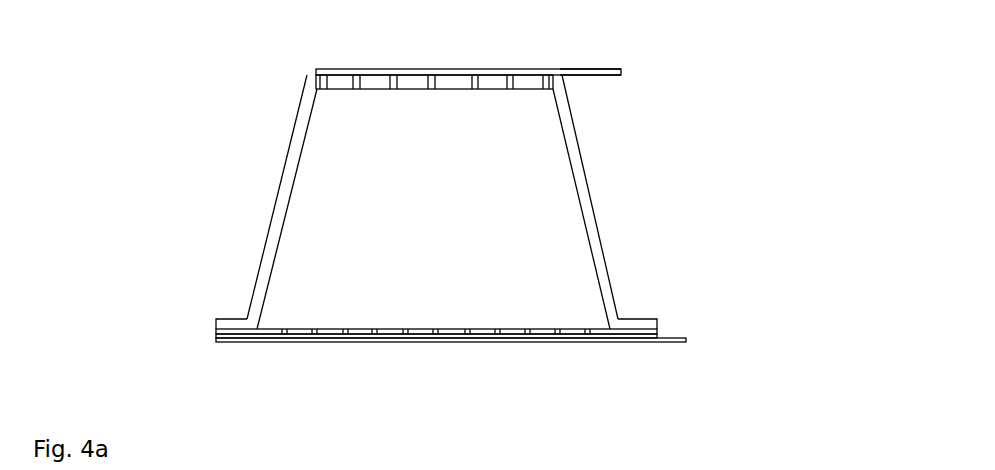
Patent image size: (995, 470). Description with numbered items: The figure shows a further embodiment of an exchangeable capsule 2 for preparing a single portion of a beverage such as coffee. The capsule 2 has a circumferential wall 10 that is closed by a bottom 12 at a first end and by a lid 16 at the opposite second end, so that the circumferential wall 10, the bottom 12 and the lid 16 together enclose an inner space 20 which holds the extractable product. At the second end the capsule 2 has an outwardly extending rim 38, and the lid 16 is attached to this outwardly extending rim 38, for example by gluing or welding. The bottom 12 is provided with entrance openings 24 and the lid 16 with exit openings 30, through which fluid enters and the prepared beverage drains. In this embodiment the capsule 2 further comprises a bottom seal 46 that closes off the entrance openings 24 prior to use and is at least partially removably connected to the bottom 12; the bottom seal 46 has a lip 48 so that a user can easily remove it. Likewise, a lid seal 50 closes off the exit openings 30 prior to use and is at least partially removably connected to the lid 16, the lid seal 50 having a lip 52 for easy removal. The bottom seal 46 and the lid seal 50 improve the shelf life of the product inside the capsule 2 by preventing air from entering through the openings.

The capsule 2 is at (748, 332).
The circumferential wall 10 is at (590, 207).
The bottom 12 is at (523, 78).
The lid 16 is at (572, 328).
The inner space 20 is at (298, 237).
The entrance openings 24 is at (327, 88).
The exit openings 30 is at (404, 331).
The outwardly extending rim 38 is at (643, 323).
The bottom seal 46 is at (530, 70).
The lip 48 is at (603, 68).
The lid seal 50 is at (565, 342).
The lip 52 is at (668, 343).